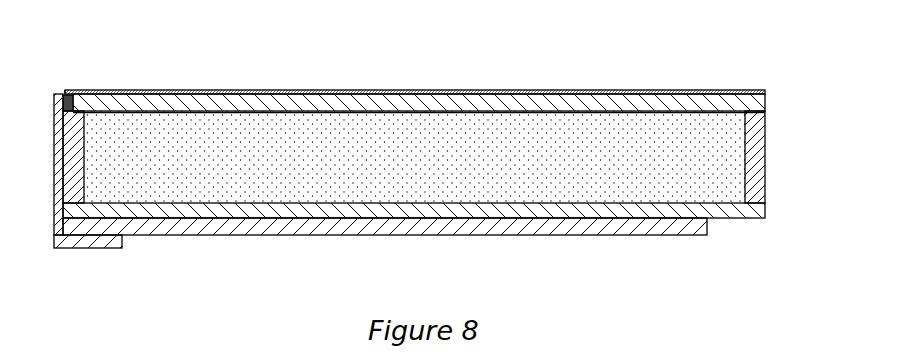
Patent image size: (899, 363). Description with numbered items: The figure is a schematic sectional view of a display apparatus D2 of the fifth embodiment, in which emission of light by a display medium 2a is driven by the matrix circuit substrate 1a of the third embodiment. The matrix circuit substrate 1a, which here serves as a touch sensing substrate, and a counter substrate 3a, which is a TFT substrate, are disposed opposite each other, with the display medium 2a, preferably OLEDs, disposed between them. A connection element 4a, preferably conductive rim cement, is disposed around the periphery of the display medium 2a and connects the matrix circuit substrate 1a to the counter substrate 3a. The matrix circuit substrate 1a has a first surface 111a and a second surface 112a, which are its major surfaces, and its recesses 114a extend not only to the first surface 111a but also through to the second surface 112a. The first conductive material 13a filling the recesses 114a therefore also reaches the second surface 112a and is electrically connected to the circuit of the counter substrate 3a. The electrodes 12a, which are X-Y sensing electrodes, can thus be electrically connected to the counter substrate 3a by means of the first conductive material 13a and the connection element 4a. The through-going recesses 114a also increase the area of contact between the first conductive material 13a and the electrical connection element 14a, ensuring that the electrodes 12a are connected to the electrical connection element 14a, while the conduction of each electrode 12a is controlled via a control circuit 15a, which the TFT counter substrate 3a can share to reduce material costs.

The display apparatus D2 is at (716, 54).
The matrix circuit substrate 1a is at (443, 97).
The display medium 2a is at (728, 184).
The counter substrate 3a is at (737, 214).
The connection element 4a is at (75, 128).
The electrodes 12a is at (185, 92).
The first conductive material 13a is at (66, 95).
The electrical connection element 14a is at (93, 248).
The control circuit 15a is at (575, 228).
The first surface 111a is at (271, 90).
The second surface 112a is at (276, 112).
The recesses 114a is at (74, 95).